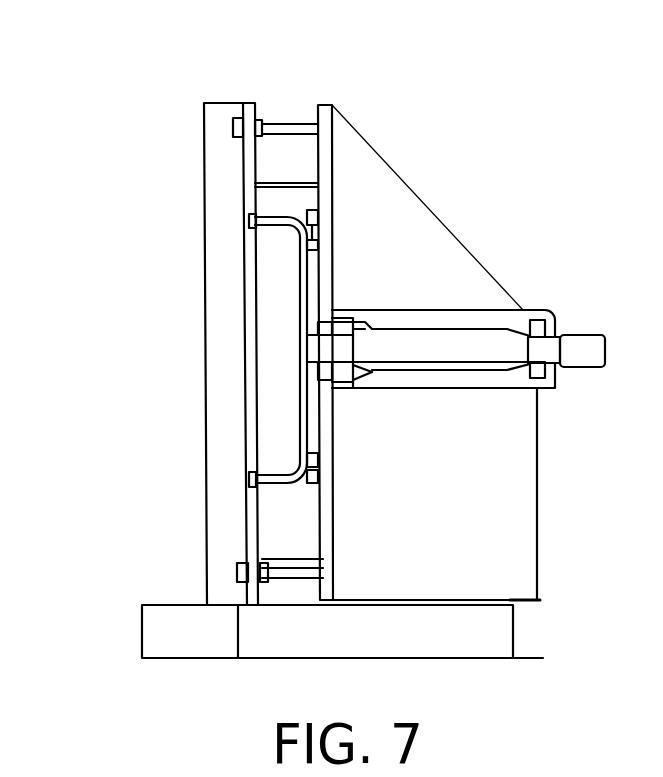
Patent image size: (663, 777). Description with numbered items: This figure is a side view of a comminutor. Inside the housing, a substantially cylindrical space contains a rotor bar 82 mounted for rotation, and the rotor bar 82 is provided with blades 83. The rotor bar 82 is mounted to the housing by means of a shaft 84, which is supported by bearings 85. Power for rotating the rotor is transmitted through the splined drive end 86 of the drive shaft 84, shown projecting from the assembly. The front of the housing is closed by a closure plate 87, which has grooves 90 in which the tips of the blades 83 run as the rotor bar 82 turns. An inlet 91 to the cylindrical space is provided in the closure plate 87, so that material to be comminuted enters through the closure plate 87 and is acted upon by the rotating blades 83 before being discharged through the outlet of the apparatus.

The rotor bar 82 is at (310, 216).
The blades 83 is at (280, 217).
The shaft 84 is at (480, 338).
The bearings 85 is at (358, 383).
The splined drive end 86 is at (593, 337).
The closure plate 87 is at (248, 112).
The grooves 90 is at (248, 226).
The inlet 91 is at (242, 348).